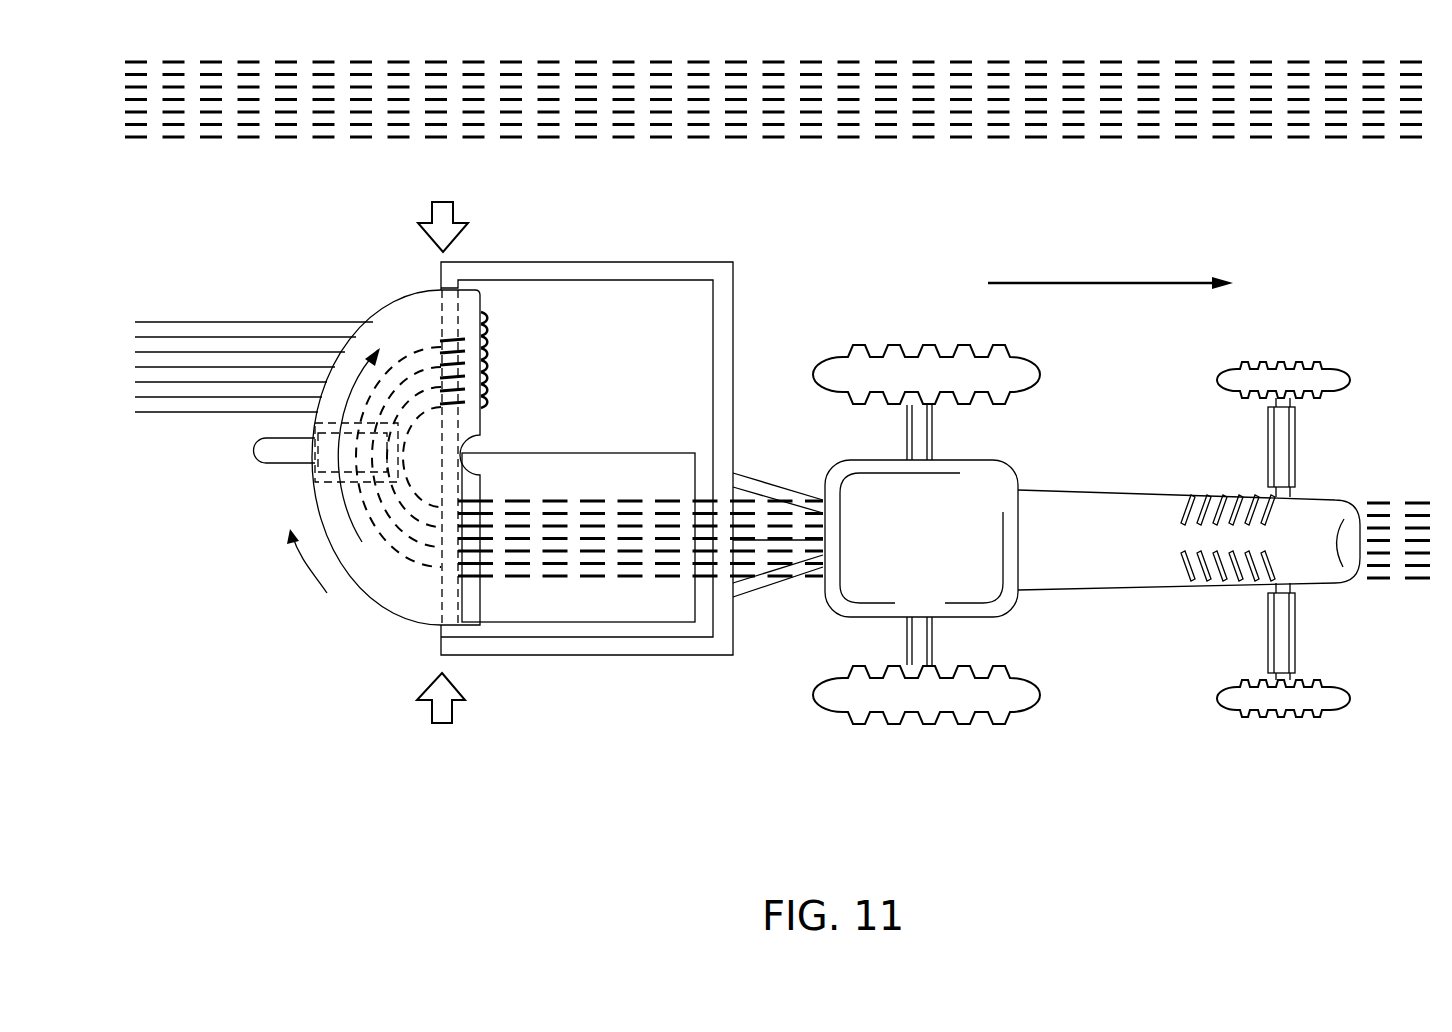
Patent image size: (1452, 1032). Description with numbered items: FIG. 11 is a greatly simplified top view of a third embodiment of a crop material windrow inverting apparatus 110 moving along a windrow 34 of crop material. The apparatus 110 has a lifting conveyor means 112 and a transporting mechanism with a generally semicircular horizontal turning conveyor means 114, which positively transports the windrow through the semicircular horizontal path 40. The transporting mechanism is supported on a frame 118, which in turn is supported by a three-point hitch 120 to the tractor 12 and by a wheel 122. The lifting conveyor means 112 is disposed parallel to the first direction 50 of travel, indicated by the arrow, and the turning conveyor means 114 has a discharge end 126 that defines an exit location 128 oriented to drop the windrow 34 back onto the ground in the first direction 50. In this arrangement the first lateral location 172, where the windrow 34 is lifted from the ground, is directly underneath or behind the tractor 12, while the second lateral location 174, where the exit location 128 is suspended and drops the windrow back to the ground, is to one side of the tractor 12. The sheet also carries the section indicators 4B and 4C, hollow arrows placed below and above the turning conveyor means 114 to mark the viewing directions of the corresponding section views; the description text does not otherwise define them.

The tractor 12 is at (1100, 505).
The windrow 34 is at (1392, 513).
The semicircular horizontal path 40 is at (347, 511).
The first direction 50 is at (1098, 283).
The apparatus 110 is at (232, 568).
The lifting conveyor means 112 is at (628, 607).
The turning conveyor means 114 is at (400, 575).
The frame 118 is at (547, 647).
The three-point hitch 120 is at (768, 590).
The wheel 122 is at (272, 455).
The discharge end 126 is at (481, 302).
The exit location 128 is at (493, 370).
The first lateral location 172 is at (1405, 583).
The second lateral location 174 is at (215, 322).
The section view 4B indicator 4B is at (441, 720).
The section view 4C indicator 4C is at (443, 209).